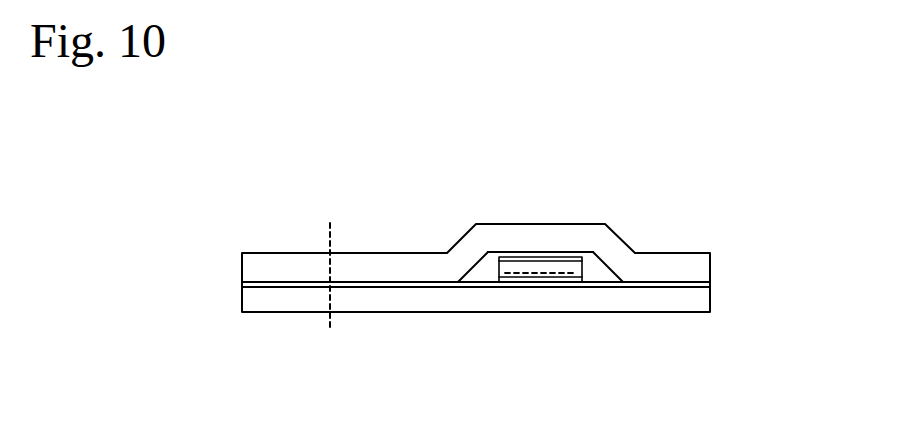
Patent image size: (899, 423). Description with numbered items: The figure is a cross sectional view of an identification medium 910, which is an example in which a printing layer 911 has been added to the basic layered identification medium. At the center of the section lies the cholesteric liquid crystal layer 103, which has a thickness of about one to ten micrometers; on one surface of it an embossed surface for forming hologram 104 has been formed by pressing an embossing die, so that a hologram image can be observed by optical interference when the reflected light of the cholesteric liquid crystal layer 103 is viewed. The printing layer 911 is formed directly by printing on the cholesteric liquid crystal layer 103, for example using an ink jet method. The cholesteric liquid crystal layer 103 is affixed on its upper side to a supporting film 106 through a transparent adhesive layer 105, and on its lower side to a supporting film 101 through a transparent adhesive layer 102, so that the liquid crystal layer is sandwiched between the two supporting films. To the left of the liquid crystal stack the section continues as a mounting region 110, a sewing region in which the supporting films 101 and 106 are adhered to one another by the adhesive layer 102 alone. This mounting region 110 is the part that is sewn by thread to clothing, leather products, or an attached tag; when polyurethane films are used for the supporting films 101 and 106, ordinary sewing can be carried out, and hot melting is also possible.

The supporting film 101 is at (705, 298).
The transparent adhesive layer 102 is at (677, 286).
The cholesteric liquid crystal layer 103 is at (570, 263).
The embossed surface for forming hologram 104 is at (537, 272).
The transparent adhesive layer 105 is at (512, 257).
The supporting film 106 is at (705, 268).
The mounting region 110 is at (330, 208).
The identification medium 910 is at (668, 177).
The printing layer 911 is at (510, 278).